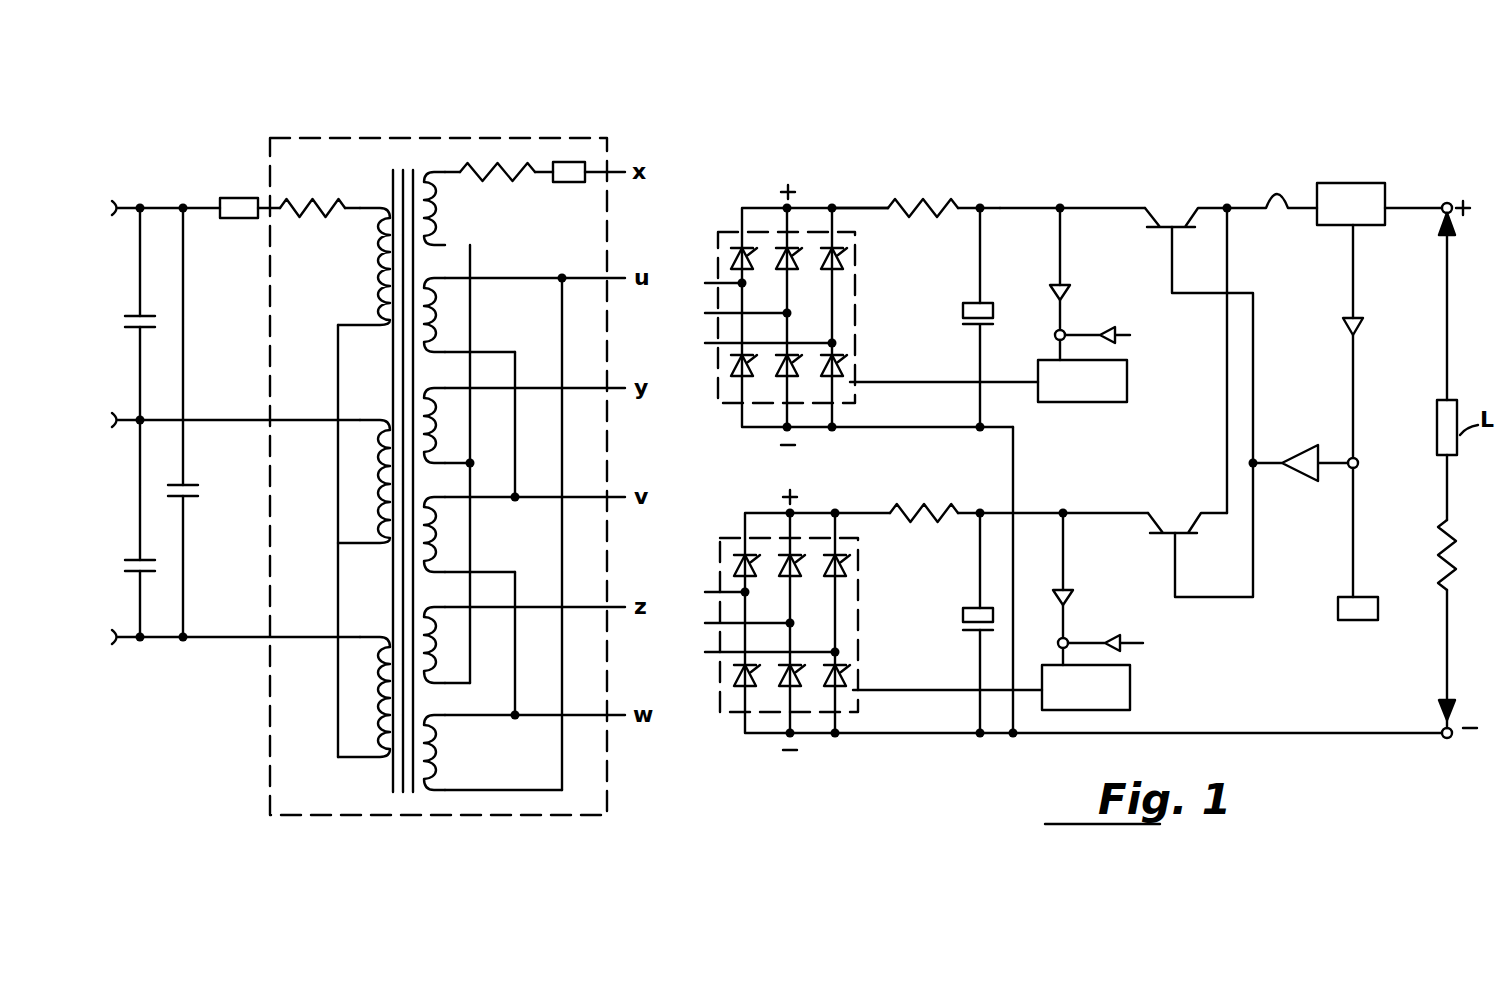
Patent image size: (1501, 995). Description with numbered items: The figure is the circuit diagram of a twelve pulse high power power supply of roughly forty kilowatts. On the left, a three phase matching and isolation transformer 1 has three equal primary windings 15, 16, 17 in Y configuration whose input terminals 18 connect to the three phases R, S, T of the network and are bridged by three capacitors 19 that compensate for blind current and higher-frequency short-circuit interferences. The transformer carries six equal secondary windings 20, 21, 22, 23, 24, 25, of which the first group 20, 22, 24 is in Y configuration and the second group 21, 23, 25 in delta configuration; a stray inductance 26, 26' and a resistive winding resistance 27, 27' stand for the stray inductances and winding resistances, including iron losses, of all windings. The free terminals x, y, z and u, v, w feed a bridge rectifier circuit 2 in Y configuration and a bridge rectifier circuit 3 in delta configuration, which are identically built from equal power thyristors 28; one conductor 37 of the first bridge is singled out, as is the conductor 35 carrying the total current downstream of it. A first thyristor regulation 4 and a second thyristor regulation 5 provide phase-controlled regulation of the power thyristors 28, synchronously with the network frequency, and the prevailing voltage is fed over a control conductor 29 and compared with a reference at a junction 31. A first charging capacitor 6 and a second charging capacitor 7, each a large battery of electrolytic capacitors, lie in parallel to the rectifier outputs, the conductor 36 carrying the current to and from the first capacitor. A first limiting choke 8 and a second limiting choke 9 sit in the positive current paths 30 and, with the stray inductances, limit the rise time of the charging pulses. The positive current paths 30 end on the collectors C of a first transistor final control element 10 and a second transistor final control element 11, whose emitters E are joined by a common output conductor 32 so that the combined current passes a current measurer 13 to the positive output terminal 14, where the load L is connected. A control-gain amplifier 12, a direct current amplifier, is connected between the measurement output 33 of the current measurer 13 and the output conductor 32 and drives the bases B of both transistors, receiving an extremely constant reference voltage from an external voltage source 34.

The three phase matching and isolation transformer 1 is at (312, 800).
The bridge rectifier circuit 2 is at (726, 240).
The bridge rectifier circuit 3 is at (732, 710).
The first thyristor regulation 4 is at (1082, 371).
The second thyristor regulation 5 is at (1086, 687).
The first charging capacitor 6 is at (962, 300).
The second charging capacitor 7 is at (962, 608).
The first limiting choke 8 is at (918, 196).
The second limiting choke 9 is at (920, 502).
The first transistor final control element 10 is at (1170, 202).
The second transistor final control element 11 is at (1176, 538).
The control-gain amplifier 12 is at (1294, 449).
The current measurer 13 is at (1334, 183).
The output terminals 14 is at (1446, 203).
The primary winding 15 is at (364, 265).
The primary winding 16 is at (364, 483).
The primary winding 17 is at (364, 695).
The input terminals 18 is at (138, 206).
The capacitors 19 is at (150, 560).
The secondary winding 20 is at (446, 217).
The secondary winding 21 is at (446, 322).
The secondary winding 22 is at (446, 430).
The secondary winding 23 is at (446, 543).
The secondary winding 24 is at (446, 651).
The secondary winding 25 is at (446, 757).
The stray inductance 26 is at (321, 191).
The stray inductance 26' is at (497, 143).
The resistive winding resistance 27 is at (236, 189).
The resistive winding resistance 27' is at (568, 143).
The power thyristor 28 is at (783, 248).
The control conductor 29 is at (1062, 257).
The positive current path 30 is at (978, 204).
The junction 31 is at (1066, 334).
The output conductor 32 is at (1232, 240).
The measurement output 33 is at (1356, 276).
The external voltage source 34 is at (1336, 611).
The conductor 35 is at (860, 205).
The conductor 36 is at (982, 259).
The conductor 37 is at (744, 312).